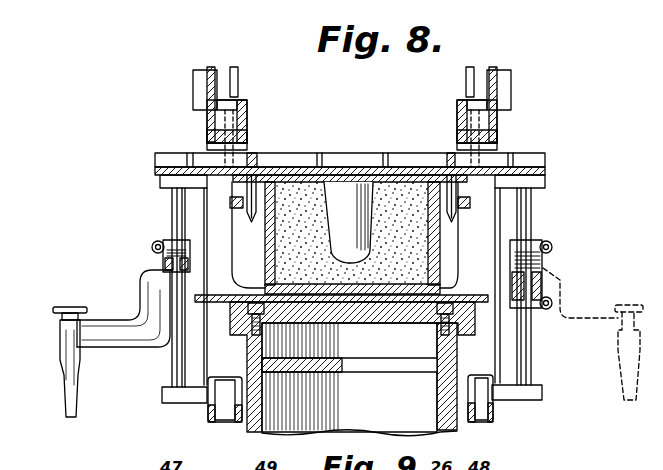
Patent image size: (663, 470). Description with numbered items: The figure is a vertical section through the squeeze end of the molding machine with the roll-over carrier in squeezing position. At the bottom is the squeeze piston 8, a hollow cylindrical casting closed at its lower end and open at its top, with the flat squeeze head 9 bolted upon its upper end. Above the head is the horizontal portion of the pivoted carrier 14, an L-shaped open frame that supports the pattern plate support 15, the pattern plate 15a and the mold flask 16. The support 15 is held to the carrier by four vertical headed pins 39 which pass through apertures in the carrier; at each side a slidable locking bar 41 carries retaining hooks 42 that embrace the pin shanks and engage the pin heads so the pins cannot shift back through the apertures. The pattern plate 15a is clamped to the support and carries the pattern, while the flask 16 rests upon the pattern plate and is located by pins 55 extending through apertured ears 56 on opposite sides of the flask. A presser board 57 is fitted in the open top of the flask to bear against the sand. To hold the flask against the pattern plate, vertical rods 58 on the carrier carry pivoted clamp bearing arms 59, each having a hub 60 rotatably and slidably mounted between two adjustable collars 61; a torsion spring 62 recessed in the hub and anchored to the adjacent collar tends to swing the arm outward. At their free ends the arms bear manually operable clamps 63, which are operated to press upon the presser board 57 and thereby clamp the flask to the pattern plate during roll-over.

The squeeze piston 8 is at (250, 425).
The squeeze head 9 is at (352, 280).
The pivoted carrier 14 is at (218, 363).
The pattern plate support 15 is at (408, 170).
The pattern plate 15a is at (352, 168).
The mold flask 16 is at (440, 243).
The headed pins 39 is at (208, 115).
The slidable locking bars 41 is at (248, 126).
The retaining hooks 42 is at (208, 130).
The pins 55 is at (247, 196).
The apertured ears 56 is at (230, 203).
The presser board 57 is at (343, 293).
The vertical rods 58 is at (173, 223).
The clamp bearing arms 59 is at (108, 320).
The hub 60 is at (545, 278).
The collars 61 is at (156, 251).
The torsion spring 62 is at (188, 260).
The manually operable clamps 63 is at (70, 305).